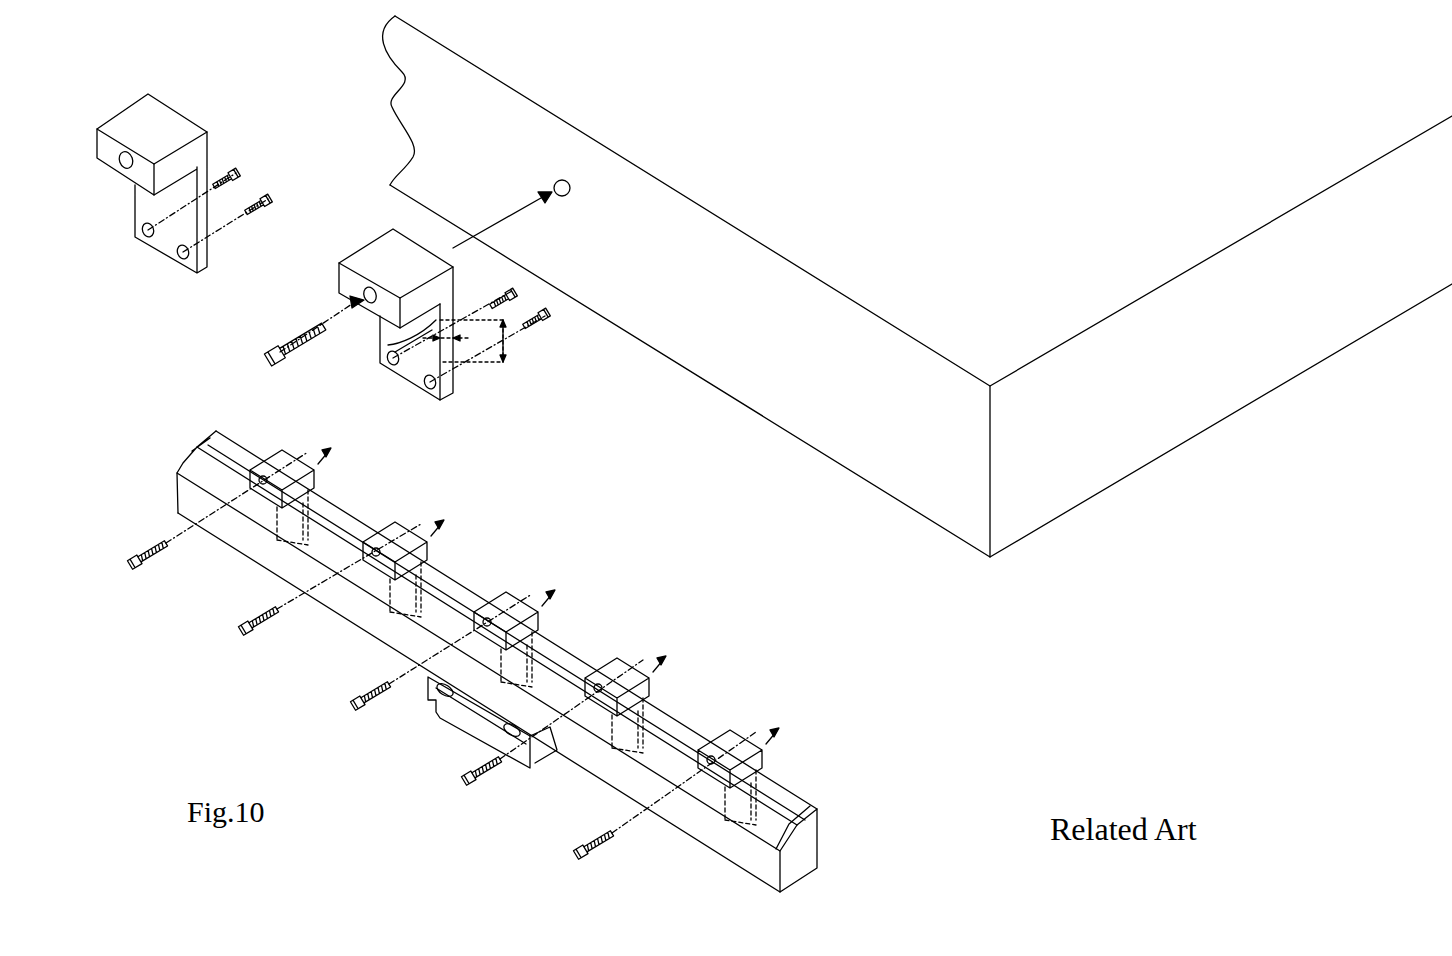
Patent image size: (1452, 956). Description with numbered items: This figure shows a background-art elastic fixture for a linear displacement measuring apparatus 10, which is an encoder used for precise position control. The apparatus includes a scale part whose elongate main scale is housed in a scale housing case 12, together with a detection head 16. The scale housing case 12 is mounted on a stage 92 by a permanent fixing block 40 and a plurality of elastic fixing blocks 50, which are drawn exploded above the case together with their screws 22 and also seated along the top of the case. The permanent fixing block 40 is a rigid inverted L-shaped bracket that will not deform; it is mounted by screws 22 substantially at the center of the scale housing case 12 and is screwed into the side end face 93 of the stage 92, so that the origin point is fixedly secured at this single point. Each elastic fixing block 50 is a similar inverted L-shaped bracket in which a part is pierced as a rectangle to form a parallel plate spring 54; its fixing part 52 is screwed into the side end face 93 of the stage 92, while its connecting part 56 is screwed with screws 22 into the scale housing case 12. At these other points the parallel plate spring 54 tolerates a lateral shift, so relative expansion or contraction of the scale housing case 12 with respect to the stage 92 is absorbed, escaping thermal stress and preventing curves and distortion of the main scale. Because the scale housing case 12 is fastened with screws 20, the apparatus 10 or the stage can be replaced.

The linear displacement measuring apparatus 10 is at (208, 416).
The scale housing case 12 is at (250, 545).
The detection head 16 is at (547, 760).
The screws 20 is at (131, 556).
The screws 22 is at (264, 195).
The permanent fixing block 40 is at (176, 112).
The elastic fixing block 50 is at (514, 520).
The fixing part 52 is at (457, 284).
The parallel plate spring 54 is at (458, 350).
The connecting part 56 is at (453, 392).
The stage 92 is at (1023, 502).
The side end face 93 is at (893, 387).